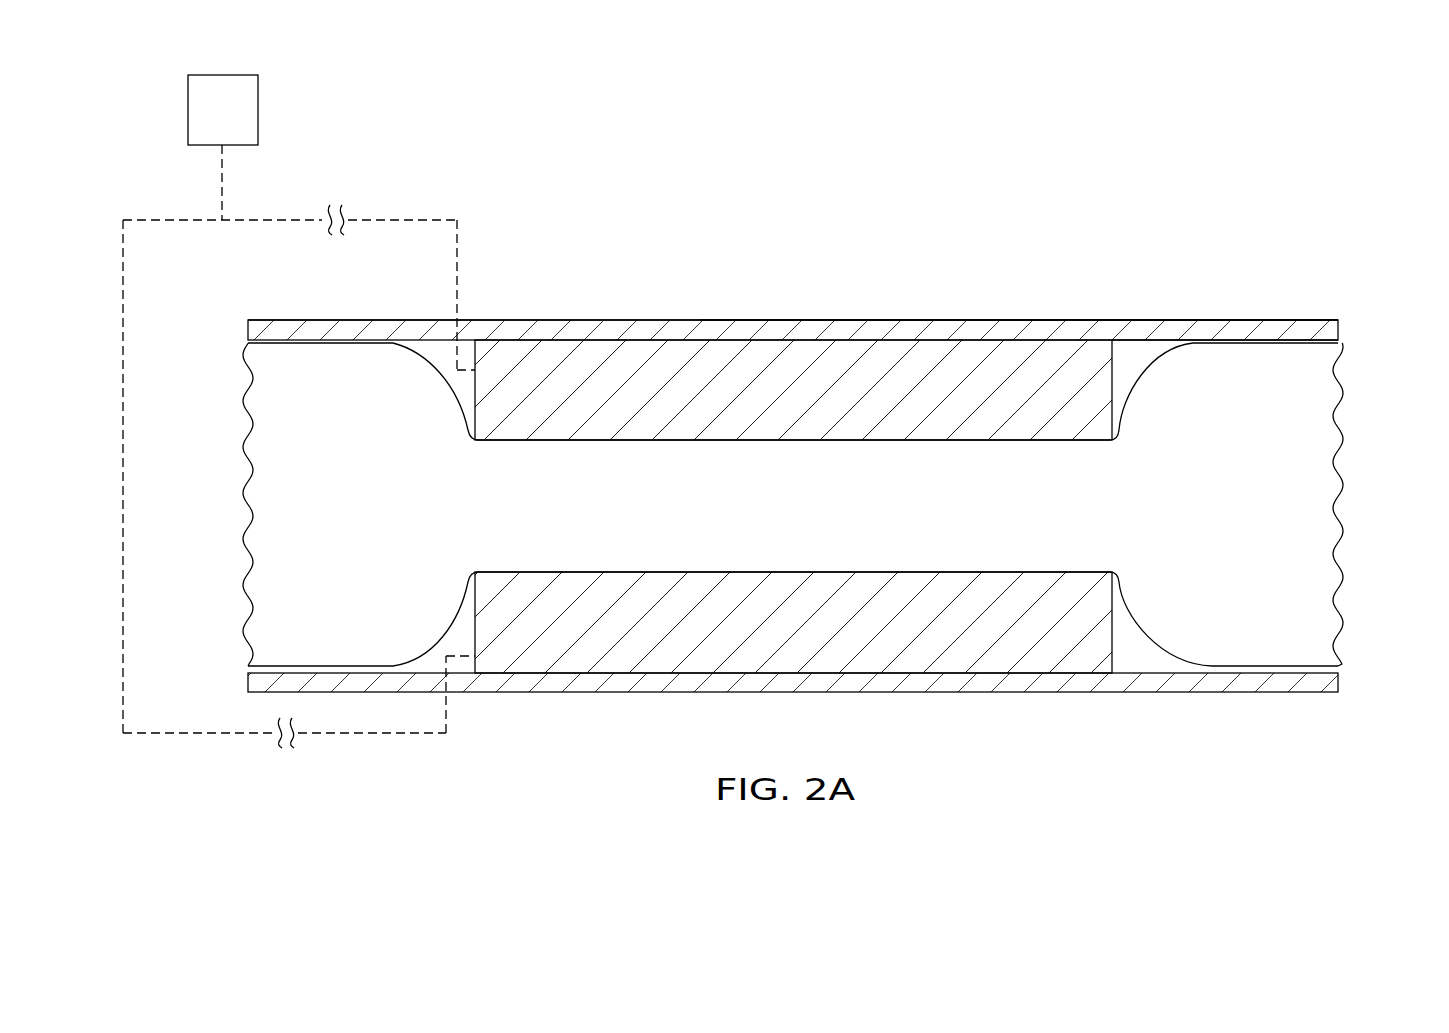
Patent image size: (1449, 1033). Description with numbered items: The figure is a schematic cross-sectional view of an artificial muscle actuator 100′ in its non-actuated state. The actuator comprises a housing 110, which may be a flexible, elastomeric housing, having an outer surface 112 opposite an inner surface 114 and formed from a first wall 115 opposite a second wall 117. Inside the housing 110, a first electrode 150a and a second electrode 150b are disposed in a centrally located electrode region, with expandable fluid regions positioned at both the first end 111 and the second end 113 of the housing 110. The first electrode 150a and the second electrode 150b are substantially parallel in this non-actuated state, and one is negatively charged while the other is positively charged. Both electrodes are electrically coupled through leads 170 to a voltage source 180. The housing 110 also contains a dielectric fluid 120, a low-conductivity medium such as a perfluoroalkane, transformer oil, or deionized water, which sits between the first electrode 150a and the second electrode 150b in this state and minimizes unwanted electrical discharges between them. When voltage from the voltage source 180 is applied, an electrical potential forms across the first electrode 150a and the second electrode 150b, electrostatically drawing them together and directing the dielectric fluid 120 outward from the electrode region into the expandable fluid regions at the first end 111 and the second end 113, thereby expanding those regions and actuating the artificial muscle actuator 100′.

The artificial muscle actuator 100′ is at (793, 406).
The housing 110 is at (793, 279).
The first end 111 is at (199, 504).
The outer surface 112 is at (1068, 320).
The second end 113 is at (1391, 504).
The inner surface 114 is at (1165, 343).
The first wall 115 is at (793, 269).
The second wall 117 is at (793, 735).
The dielectric fluid 120 is at (1213, 653).
The first electrode 150a is at (793, 339).
The second electrode 150b is at (793, 675).
The leads 170 is at (122, 277).
The voltage source 180 is at (260, 112).